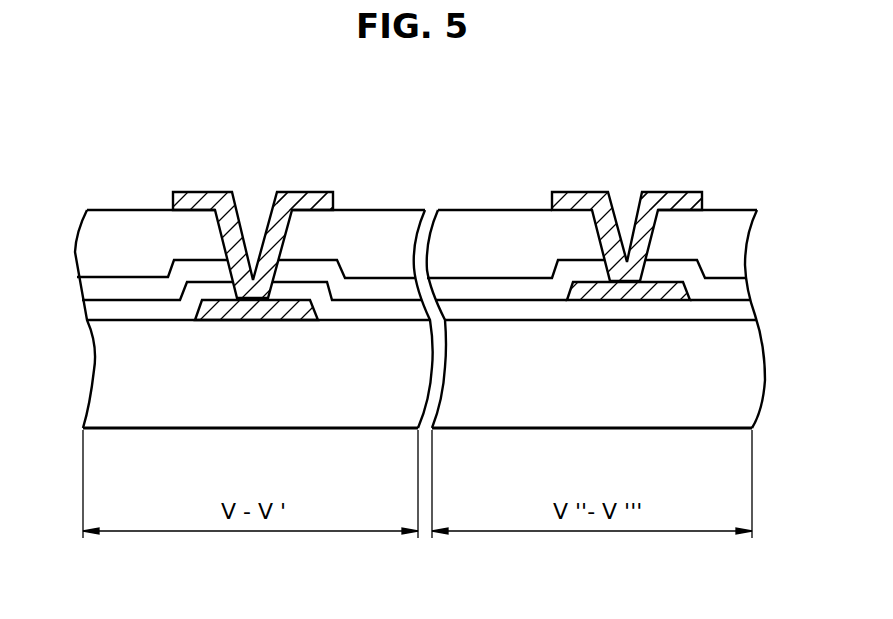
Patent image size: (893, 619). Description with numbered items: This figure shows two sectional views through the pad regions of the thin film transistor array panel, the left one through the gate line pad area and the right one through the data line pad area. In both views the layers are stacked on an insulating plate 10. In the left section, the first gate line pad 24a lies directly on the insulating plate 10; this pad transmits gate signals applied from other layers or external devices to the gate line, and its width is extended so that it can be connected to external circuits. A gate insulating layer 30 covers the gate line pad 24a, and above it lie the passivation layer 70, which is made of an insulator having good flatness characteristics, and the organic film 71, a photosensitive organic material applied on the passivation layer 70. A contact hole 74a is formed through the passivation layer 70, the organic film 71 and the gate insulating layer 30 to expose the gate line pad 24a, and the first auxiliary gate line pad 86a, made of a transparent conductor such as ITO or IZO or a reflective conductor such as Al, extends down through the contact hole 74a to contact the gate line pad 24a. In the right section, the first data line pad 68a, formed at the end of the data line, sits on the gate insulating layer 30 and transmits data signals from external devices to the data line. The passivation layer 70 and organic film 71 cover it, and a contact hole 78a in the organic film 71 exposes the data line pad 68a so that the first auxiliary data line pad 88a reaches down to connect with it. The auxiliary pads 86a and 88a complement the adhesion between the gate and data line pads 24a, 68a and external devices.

The insulating plate 10 is at (115, 397).
The first gate line pad 24a is at (207, 310).
The gate insulating layer 30 is at (367, 308).
The passivation layer 70 is at (473, 288).
The organic film 71 is at (517, 260).
The first data line pad 68a is at (620, 293).
The contact hole 74a is at (247, 184).
The first auxiliary gate line pad 86a is at (308, 198).
The contact hole 78a is at (620, 179).
The first auxiliary data line pad 88a is at (677, 198).